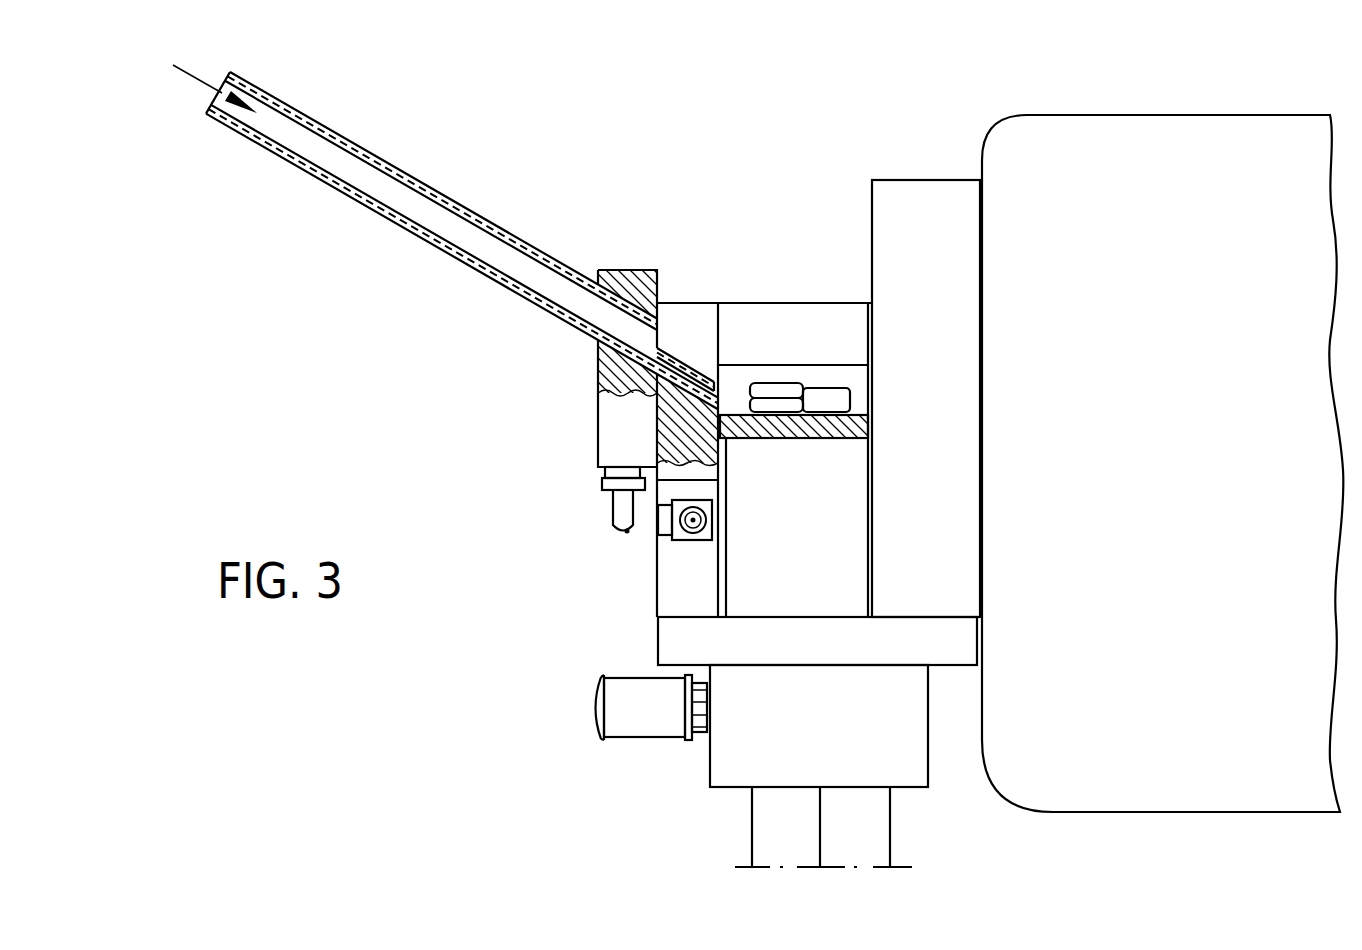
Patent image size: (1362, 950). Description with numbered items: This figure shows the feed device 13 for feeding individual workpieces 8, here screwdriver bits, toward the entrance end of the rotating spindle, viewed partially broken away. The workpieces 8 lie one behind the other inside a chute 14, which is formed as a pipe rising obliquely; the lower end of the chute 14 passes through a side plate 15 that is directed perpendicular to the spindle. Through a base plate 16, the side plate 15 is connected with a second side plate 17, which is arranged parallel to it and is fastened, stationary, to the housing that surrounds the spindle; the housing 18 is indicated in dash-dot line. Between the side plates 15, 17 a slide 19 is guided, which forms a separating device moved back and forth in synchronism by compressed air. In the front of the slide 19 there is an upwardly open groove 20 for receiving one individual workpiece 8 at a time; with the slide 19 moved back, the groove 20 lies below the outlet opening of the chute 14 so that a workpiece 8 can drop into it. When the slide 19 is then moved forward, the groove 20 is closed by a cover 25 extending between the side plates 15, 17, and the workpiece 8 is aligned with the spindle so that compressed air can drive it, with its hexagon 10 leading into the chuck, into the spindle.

The individual workpiece 8 is at (788, 383).
The hexagon 10 is at (772, 410).
The feed device 13 is at (508, 547).
The chute 14 is at (392, 220).
The side plate 15 is at (678, 578).
The base plate 16 is at (780, 645).
The side plate 17 is at (920, 233).
The machine frame 18 is at (1147, 148).
The slide 19 is at (740, 430).
The groove 20 is at (737, 380).
The cover 25 is at (730, 317).